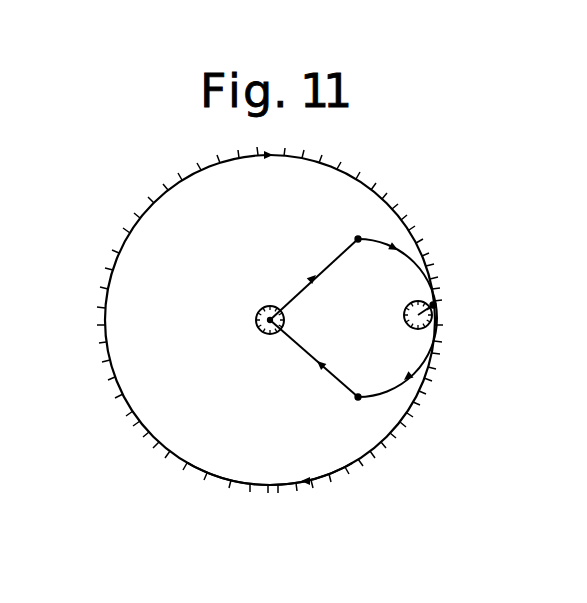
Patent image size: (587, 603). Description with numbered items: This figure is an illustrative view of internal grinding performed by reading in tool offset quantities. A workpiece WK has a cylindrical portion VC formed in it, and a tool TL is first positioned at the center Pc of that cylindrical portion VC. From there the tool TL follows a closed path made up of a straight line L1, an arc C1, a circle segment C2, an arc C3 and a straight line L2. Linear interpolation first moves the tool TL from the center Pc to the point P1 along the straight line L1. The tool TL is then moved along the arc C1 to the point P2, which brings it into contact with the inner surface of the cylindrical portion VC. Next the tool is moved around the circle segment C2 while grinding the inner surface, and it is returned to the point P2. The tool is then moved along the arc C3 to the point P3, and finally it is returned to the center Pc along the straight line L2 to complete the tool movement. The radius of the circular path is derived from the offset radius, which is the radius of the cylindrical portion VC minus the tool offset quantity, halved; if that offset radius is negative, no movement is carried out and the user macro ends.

The workpiece WK is at (128, 408).
The cylindrical portion VC is at (205, 445).
The tool TL is at (259, 334).
The center Pc is at (266, 306).
The point P1 is at (357, 226).
The point P2 is at (437, 304).
The point P3 is at (353, 409).
The straight line L1 is at (333, 257).
The straight line L2 is at (304, 357).
The arc C1 is at (413, 256).
The circle segment C2 is at (355, 462).
The arc C3 is at (409, 406).